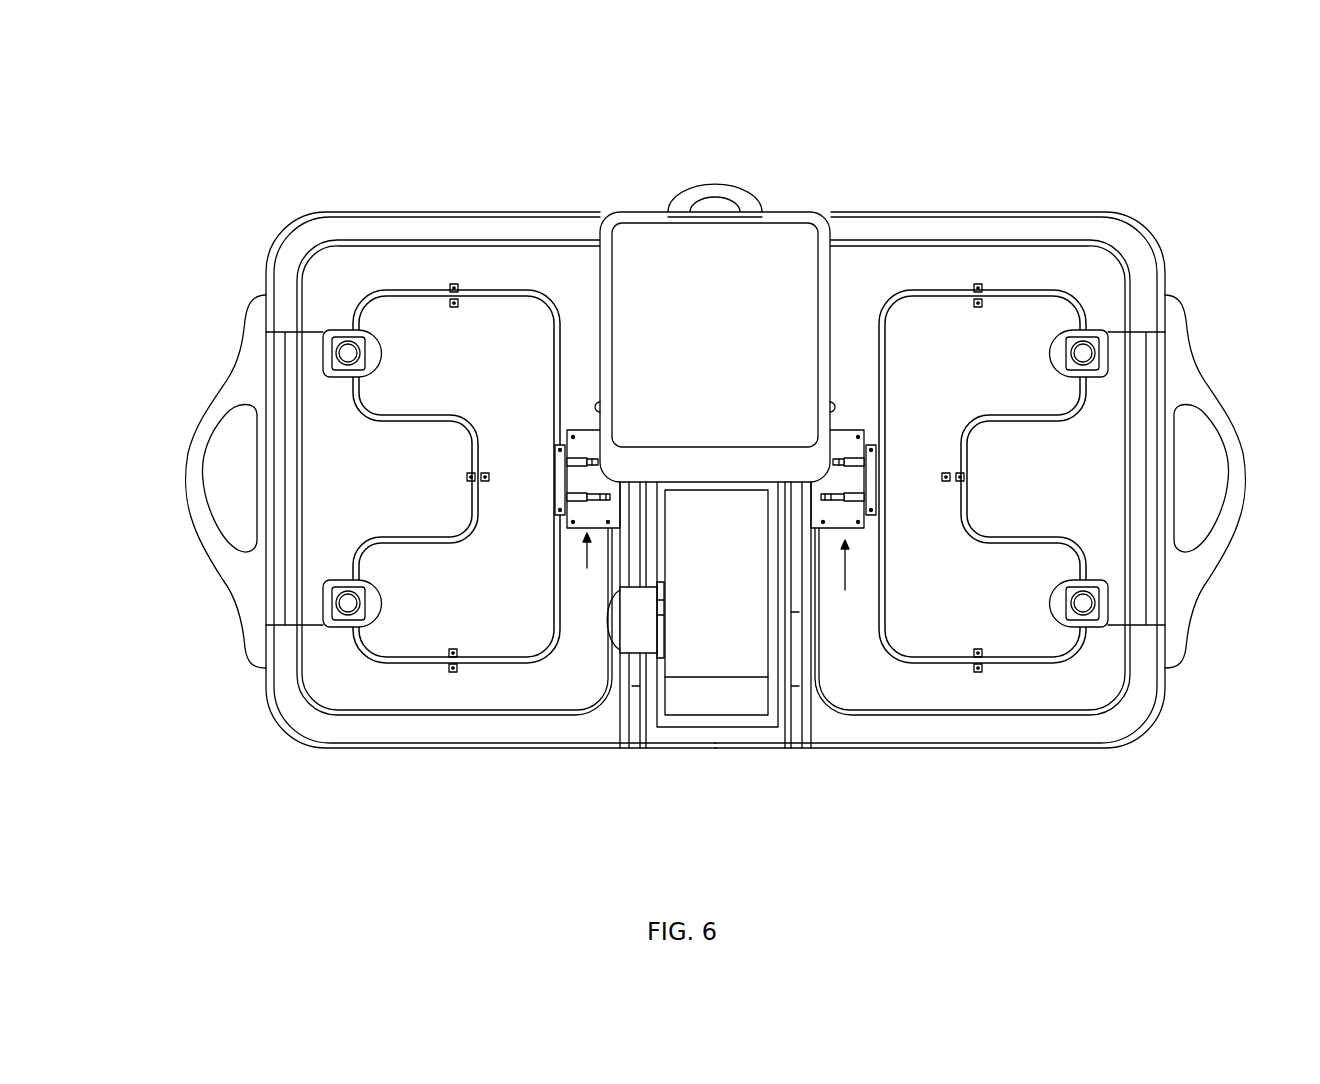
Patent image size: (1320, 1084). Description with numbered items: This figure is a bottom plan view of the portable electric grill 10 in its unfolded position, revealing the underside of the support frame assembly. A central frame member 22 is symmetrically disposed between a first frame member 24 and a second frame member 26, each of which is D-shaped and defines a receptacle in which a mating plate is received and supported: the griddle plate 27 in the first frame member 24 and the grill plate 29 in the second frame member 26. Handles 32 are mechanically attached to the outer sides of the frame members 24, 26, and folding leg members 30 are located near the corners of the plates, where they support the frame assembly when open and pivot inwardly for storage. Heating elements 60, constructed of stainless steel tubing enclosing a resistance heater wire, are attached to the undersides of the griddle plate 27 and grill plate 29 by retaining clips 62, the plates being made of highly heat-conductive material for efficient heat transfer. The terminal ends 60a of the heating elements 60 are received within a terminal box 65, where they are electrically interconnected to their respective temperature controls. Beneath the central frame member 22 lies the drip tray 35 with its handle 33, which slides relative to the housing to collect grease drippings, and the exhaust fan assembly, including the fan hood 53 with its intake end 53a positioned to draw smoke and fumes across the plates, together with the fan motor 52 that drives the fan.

The portable electric grill 10 is at (327, 162).
The central frame member 22 is at (657, 728).
The first frame member 24 is at (432, 214).
The second frame member 26 is at (915, 212).
The griddle plate 27 is at (473, 270).
The grill plate 29 is at (948, 270).
The folding leg members 30 is at (347, 346).
The handles 32 is at (245, 588).
The handle 33 is at (722, 188).
The drip tray 35 is at (770, 245).
The fan motor 52 is at (606, 620).
The fan hood 53 is at (726, 668).
The intake end 53a is at (715, 492).
The heating elements 60 is at (388, 662).
The terminal ends 60a is at (580, 496).
The retaining clips 62 is at (457, 308).
The terminal box 65 is at (713, 576).